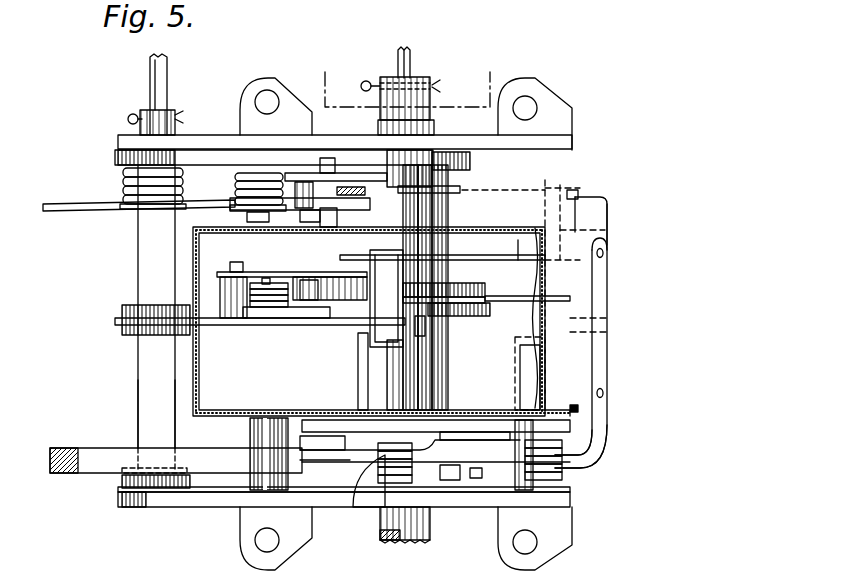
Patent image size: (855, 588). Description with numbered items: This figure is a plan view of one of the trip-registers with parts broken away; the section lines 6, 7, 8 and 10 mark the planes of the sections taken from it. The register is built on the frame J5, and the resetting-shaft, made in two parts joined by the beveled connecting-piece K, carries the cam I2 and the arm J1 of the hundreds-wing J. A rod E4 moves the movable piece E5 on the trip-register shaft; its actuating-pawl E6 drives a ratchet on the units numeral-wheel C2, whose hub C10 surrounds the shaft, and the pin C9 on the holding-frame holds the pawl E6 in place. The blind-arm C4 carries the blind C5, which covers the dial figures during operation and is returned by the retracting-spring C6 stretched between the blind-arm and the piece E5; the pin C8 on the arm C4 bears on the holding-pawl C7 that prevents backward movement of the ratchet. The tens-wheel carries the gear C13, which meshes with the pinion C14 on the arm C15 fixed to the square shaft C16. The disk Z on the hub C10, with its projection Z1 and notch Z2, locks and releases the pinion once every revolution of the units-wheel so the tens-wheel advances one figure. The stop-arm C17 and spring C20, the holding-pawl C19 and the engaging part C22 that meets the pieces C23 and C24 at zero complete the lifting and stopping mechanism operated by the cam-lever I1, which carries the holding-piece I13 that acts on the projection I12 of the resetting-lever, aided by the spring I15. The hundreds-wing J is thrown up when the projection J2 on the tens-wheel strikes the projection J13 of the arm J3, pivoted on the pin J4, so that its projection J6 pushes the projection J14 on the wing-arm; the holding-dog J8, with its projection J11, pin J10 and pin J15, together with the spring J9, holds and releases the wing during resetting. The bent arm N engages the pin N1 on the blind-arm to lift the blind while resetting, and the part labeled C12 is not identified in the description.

The section line 6- 6 is at (704, 505).
The section line 7- 7 is at (720, 254).
The section line 8- 8 is at (675, 72).
The section line 10- 10 is at (395, 556).
The hundreds-wing J is at (575, 186).
The wing-arm J1 is at (305, 182).
The tens-wheel projection J2 is at (330, 217).
The arm J3 is at (247, 220).
The pin J4 is at (300, 218).
The frame J5 is at (192, 140).
The projection J6 is at (353, 197).
The holding-piece J8 is at (445, 152).
The retracting-spring J9 is at (236, 192).
The pin J10 is at (307, 185).
The projection J11 is at (462, 188).
The projection J13 is at (313, 217).
The projection J14 is at (348, 187).
The pin J15 is at (326, 158).
The connecting-piece K is at (410, 53).
The cam-lever I1 is at (378, 135).
The cam I2 is at (498, 140).
The projection I12 is at (410, 108).
The holding-piece I13 is at (420, 125).
The spring I15 is at (127, 180).
The units numeral-wheel C2 is at (193, 365).
The blind-arm C4 is at (590, 458).
The blind C5 is at (603, 217).
The retracting-spring C6 is at (430, 492).
The holding-pawl C7 is at (575, 432).
The pin C8 is at (520, 395).
The pin C9 is at (252, 432).
The hub C10 is at (360, 394).
The sleeve C12 is at (445, 251).
The gear-wheel C13 is at (485, 290).
The pinion C14 is at (317, 292).
The arm C15 is at (122, 320).
The shaft C16 is at (145, 404).
The stop-arm C17 is at (215, 272).
The holding-pawl C19 is at (313, 320).
The spring C20 is at (267, 305).
The engaging part C22 is at (377, 337).
The piece C23 is at (518, 377).
The piece C24 is at (518, 243).
The disk Z is at (490, 308).
The projection Z1 is at (418, 297).
The notch Z2 is at (428, 312).
The rod E4 is at (97, 468).
The movable piece E5 is at (357, 455).
The actuating-pawl E6 is at (312, 430).
The bent arm N is at (233, 488).
The pin N1 is at (475, 490).